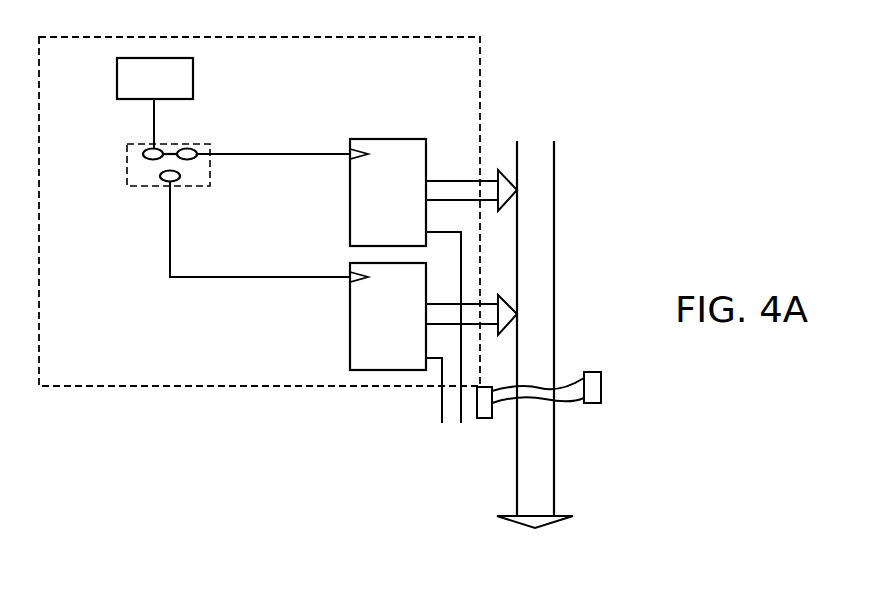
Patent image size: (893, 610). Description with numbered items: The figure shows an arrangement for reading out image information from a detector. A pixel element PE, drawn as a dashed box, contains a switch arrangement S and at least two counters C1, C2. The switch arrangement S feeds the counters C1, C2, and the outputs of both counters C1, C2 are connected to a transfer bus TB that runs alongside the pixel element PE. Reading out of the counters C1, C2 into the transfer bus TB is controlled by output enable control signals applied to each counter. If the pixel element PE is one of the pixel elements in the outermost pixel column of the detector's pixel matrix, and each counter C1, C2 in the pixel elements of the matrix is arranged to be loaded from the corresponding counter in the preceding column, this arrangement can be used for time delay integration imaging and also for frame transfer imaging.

The pixel element PE is at (480, 62).
The switch arrangement S is at (127, 165).
The counter C1 is at (350, 230).
The counter C2 is at (350, 350).
The transfer bus TB is at (554, 463).